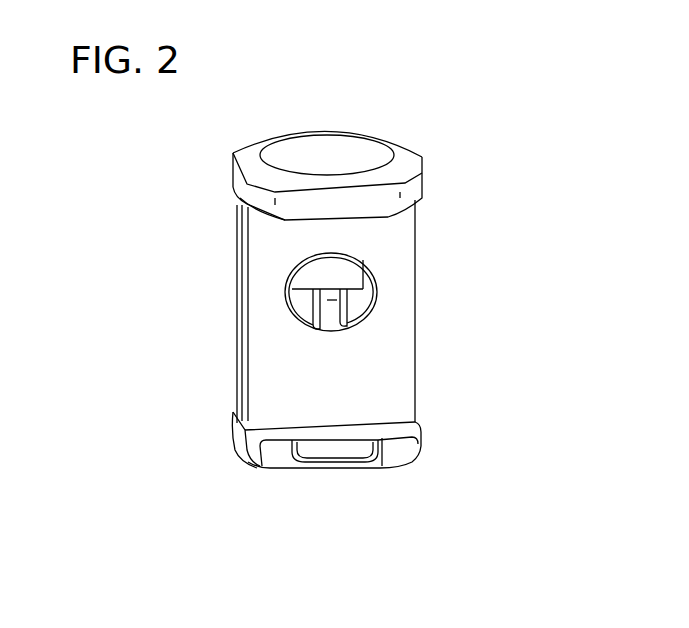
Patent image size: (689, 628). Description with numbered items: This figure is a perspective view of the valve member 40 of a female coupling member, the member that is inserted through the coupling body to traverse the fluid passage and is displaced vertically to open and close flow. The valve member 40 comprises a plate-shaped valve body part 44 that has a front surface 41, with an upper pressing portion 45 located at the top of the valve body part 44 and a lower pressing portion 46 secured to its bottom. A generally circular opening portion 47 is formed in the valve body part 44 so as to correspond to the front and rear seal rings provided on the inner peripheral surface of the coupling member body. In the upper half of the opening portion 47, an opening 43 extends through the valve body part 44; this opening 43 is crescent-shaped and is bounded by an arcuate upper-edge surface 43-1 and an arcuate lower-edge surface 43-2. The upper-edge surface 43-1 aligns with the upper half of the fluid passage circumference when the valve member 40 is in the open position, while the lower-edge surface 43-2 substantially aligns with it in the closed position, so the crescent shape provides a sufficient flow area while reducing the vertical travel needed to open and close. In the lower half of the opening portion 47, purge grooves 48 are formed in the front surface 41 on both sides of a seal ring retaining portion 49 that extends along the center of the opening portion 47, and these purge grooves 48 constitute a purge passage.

The valve member 40 is at (430, 103).
The front surface 41 is at (262, 400).
The opening 43 is at (317, 270).
The arcuate upper-edge surface 43-1 is at (332, 253).
The arcuate lower-edge surface 43-2 is at (305, 288).
The valve body part 44 is at (410, 238).
The upper pressing portion 45 is at (345, 180).
The lower pressing portion 46 is at (390, 455).
The opening portion 47 is at (378, 279).
The purge grooves 48 is at (302, 308).
The seal ring retaining portion 49 is at (328, 304).